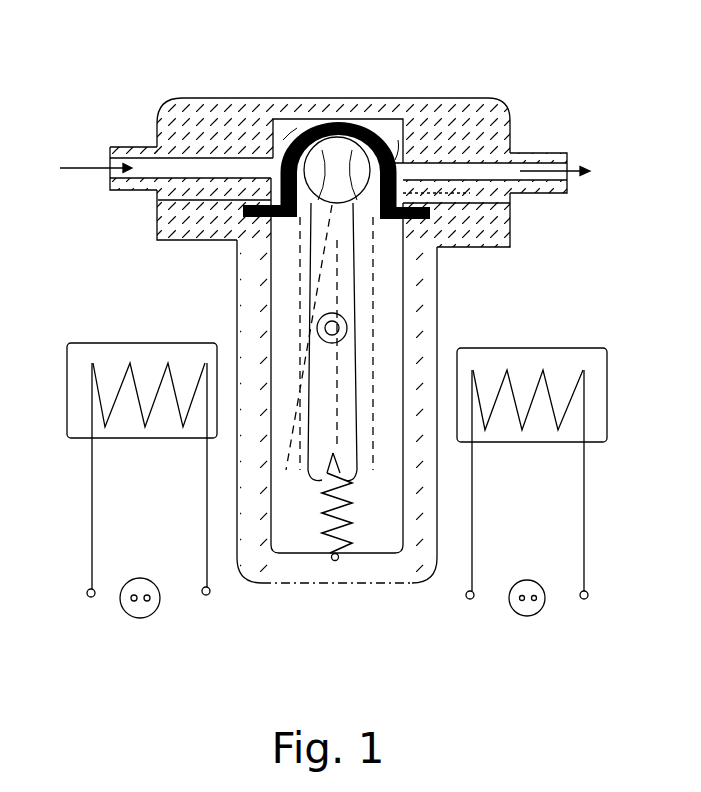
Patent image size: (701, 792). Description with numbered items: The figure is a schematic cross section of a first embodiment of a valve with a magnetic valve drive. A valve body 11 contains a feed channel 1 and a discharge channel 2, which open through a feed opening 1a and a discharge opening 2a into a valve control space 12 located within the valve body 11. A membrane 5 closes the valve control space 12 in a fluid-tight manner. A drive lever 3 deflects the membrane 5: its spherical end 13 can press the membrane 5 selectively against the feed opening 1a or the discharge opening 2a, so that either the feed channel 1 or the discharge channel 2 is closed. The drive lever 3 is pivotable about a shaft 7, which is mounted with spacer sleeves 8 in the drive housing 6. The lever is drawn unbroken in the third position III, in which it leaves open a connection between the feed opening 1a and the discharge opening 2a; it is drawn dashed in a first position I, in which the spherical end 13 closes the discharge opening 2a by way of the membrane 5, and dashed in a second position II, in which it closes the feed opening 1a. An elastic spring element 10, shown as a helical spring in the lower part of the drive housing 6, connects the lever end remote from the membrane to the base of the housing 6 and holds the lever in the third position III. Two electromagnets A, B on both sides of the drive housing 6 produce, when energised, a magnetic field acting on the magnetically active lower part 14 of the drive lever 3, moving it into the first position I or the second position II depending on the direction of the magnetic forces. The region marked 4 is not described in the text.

The feed channel 1 is at (80, 164).
The feed opening 1a is at (267, 160).
The discharge channel 2 is at (573, 171).
The discharge opening 2a is at (393, 172).
The drive lever 3 is at (342, 280).
The outlet valve seat 4 is at (500, 198).
The membrane 5 is at (408, 164).
The drive housing 6 is at (423, 320).
The shaft 7 is at (318, 328).
The spacer sleeves 8 is at (320, 322).
The elastic spring element 10 is at (347, 533).
The valve body 11 is at (500, 112).
The valve control space 12 is at (378, 128).
The spherical end 13 is at (237, 242).
The lower part of the drive lever 14 is at (318, 437).
The first position I is at (400, 165).
The second position II is at (283, 140).
The third position III is at (337, 200).
The electromagnet A is at (142, 480).
The electromagnet B is at (532, 482).